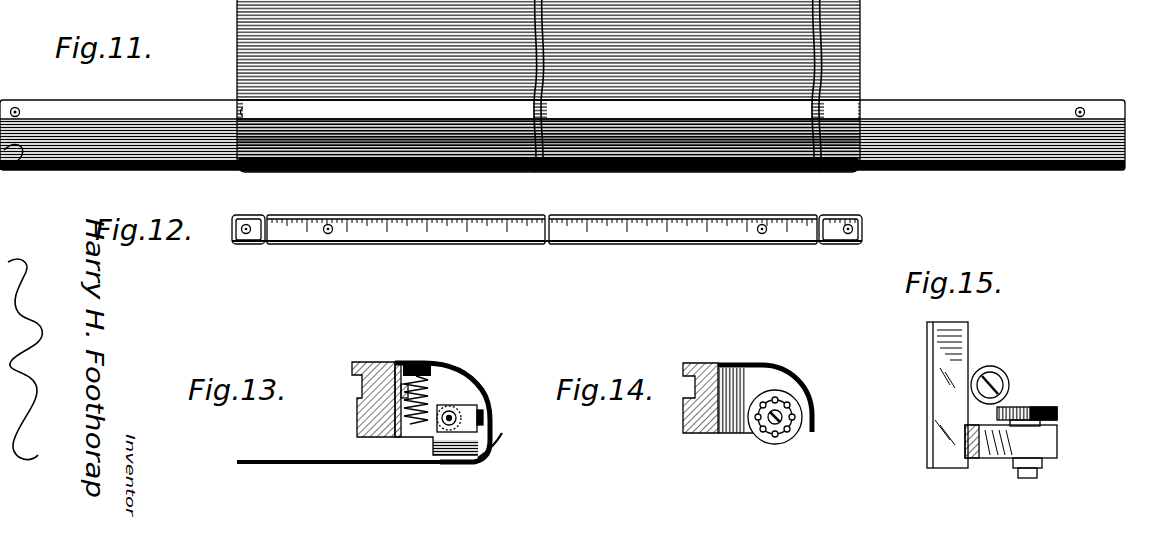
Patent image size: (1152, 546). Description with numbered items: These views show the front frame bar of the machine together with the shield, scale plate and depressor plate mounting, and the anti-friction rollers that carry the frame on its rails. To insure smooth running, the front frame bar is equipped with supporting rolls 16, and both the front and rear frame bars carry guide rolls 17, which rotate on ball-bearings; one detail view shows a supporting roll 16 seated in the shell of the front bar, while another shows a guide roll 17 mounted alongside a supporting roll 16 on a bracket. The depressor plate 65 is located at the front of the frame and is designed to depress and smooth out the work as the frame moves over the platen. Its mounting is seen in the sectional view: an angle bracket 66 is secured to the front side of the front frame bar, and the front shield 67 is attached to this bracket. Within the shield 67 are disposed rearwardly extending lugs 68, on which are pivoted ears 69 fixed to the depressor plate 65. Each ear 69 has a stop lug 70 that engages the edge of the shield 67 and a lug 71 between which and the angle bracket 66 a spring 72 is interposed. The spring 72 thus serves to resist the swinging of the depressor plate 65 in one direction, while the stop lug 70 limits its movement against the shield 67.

In FIG. 14, the supporting rolls 16 is at (768, 442).
In FIG. 15, the supporting rolls 16 is at (1040, 408).
In FIG. 15, the guide rolls 17 is at (1005, 360).
In FIG. 13, the depressor plate 65 is at (318, 464).
In FIG. 13, the angle bracket 66 is at (396, 362).
In FIG. 13, the front shield 67 is at (468, 386).
In FIG. 13, the rearwardly extending lugs 68 is at (466, 405).
In FIG. 13, the ears 69 is at (484, 459).
In FIG. 13, the stop lug 70 is at (504, 444).
In FIG. 13, the lug 71 is at (420, 428).
In FIG. 13, the spring 72 is at (436, 376).